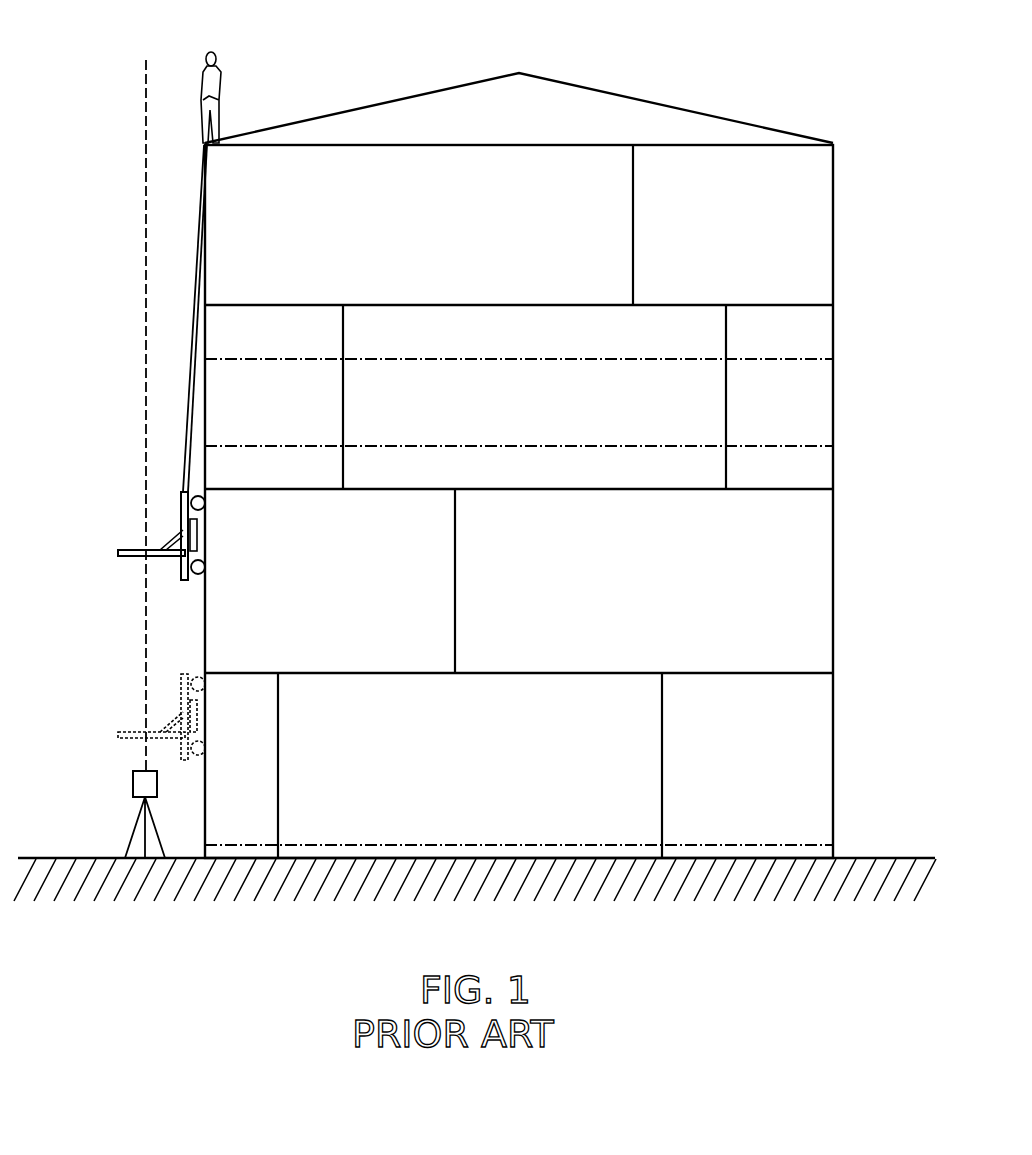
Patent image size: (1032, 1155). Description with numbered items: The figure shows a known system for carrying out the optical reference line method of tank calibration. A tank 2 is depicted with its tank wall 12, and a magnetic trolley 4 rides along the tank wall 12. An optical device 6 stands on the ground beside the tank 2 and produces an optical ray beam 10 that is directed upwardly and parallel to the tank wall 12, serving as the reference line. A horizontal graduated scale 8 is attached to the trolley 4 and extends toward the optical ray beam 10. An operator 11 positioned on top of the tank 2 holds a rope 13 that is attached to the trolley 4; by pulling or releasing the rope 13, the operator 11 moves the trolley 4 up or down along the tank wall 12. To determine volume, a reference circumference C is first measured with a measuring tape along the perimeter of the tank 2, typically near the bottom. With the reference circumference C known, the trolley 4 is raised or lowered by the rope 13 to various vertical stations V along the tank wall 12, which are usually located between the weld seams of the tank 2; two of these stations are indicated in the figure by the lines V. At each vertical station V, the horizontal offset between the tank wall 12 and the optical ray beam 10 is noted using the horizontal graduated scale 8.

The tank 2 is at (835, 212).
The magnetic trolley 4 is at (182, 518).
The optical device 6 is at (100, 815).
The horizontal graduated scale 8 is at (132, 557).
The optical ray beam 10 is at (146, 170).
The operator 11 is at (224, 62).
The tank wall 12 is at (210, 238).
The rope 13 is at (192, 363).
The vertical stations V is at (463, 358).
The reference circumference C is at (710, 843).